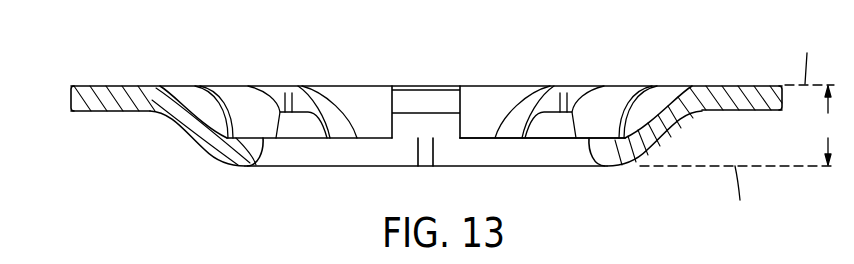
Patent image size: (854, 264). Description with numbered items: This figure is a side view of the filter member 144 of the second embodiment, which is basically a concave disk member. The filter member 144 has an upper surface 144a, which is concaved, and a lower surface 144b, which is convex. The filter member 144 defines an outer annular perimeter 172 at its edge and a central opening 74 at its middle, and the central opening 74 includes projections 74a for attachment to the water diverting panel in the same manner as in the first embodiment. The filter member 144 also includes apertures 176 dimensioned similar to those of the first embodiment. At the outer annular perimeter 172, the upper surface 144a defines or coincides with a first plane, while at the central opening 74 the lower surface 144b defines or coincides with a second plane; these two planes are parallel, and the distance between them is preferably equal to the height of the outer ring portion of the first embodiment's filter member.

The filter member 144 is at (602, 48).
The upper surface 144a is at (107, 86).
The lower surface 144b is at (107, 112).
The outer annular perimeter 172 is at (68, 100).
The apertures 176 is at (312, 103).
The central opening 74 is at (540, 153).
The projections 74a is at (423, 166).